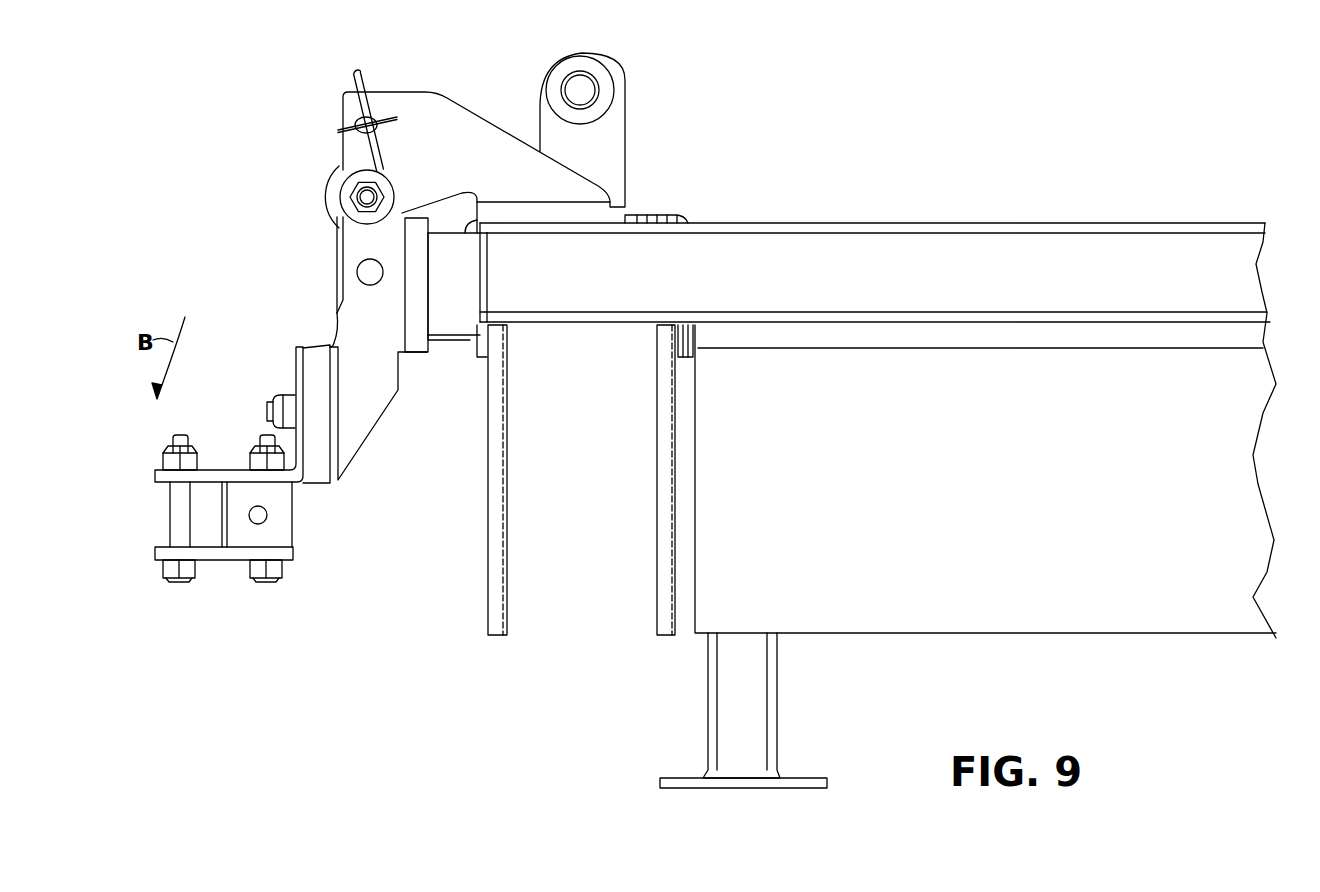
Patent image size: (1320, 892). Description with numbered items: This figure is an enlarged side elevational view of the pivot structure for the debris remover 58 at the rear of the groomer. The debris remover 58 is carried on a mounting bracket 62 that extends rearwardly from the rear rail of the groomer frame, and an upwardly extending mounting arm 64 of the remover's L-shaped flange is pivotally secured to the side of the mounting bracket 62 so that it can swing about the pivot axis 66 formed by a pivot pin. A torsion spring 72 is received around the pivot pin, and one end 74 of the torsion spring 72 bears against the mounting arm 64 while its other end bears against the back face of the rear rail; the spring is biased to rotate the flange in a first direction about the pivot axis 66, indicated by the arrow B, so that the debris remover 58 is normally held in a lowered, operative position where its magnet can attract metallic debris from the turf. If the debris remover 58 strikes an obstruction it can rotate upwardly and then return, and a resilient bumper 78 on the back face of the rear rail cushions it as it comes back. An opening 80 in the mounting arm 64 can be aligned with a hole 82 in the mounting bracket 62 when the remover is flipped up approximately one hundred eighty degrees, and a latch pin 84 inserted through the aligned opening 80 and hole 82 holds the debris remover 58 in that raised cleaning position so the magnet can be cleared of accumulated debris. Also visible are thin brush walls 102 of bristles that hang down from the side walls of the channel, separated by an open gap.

The debris remover 58 is at (242, 432).
The mounting bracket 62 is at (468, 108).
The mounting arm 64 is at (348, 355).
The pivot axis 66 is at (352, 203).
The torsion spring 72 is at (338, 178).
The end of torsion spring 74 is at (332, 340).
The resilient bumper 78 is at (450, 325).
The opening 80 is at (357, 273).
The hole 82 is at (375, 132).
The latch pin 84 is at (365, 130).
The brush wall 102 is at (488, 528).